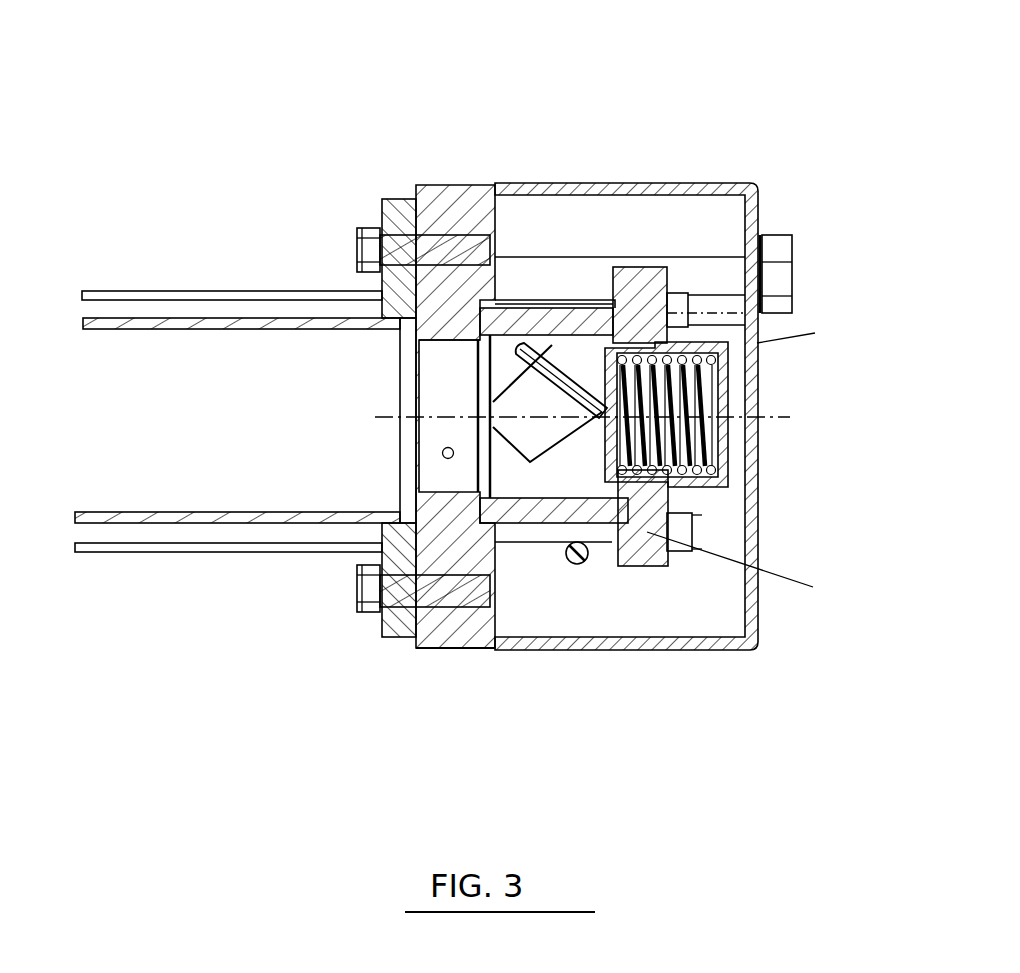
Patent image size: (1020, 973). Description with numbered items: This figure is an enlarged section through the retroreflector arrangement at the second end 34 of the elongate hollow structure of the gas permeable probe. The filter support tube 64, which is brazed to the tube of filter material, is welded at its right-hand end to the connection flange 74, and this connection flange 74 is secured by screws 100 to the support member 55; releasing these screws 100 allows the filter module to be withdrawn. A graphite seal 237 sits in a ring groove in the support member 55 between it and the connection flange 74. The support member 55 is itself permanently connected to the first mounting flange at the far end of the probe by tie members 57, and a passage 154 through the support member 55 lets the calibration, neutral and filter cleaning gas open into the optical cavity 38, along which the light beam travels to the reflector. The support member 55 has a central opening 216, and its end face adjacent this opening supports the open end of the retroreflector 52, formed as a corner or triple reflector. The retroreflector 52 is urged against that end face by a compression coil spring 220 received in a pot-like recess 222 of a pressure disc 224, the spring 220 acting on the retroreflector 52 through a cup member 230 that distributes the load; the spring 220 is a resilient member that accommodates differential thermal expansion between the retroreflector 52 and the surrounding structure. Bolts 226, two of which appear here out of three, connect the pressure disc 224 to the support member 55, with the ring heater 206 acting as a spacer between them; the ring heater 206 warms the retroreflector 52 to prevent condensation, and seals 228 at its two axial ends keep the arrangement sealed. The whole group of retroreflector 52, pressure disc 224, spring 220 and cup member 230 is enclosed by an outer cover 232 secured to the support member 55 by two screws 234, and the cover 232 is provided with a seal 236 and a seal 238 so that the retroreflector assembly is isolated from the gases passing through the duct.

The second end 34 is at (428, 175).
The optical cavity 38 is at (270, 425).
The retroreflector 52 is at (547, 428).
The support member 55 is at (442, 652).
The tie members 57 is at (178, 292).
The filter support tube 64 is at (132, 317).
The connection flange 74 is at (385, 553).
The screws 100 is at (355, 590).
The passage 154 is at (442, 453).
The ring heater 206 is at (593, 510).
The central opening 216 is at (457, 338).
The compression coil spring 220 is at (697, 427).
The pot-like recess 222 is at (745, 465).
The pressure disc 224 is at (660, 498).
The bolts 226 is at (690, 326).
The seals 228 is at (597, 300).
The cup member 230 is at (605, 450).
The outer cover 232 is at (647, 182).
The screws 234 is at (792, 265).
The seal 236 is at (465, 200).
The graphite seal 237 is at (392, 197).
The seal 238 is at (762, 223).